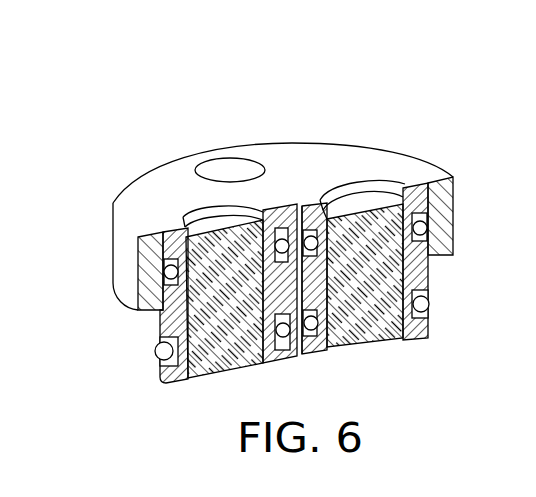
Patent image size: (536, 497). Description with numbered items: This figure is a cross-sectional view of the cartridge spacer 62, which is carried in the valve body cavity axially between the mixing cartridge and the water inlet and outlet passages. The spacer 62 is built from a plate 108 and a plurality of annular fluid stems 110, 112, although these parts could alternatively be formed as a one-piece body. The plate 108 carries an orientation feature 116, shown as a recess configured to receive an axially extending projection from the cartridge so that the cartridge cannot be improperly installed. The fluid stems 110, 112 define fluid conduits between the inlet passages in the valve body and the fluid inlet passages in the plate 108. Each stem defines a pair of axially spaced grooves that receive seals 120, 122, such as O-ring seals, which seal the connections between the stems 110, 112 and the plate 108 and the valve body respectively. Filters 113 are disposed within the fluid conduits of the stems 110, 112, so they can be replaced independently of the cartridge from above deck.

The spacer 62 is at (354, 123).
The plate 108 is at (393, 167).
The fluid stem 110 is at (278, 360).
The fluid stem 112 is at (423, 336).
The filter 113 is at (218, 352).
The orientation feature 116 is at (231, 170).
The seal 120 is at (167, 277).
The seal 122 is at (160, 357).